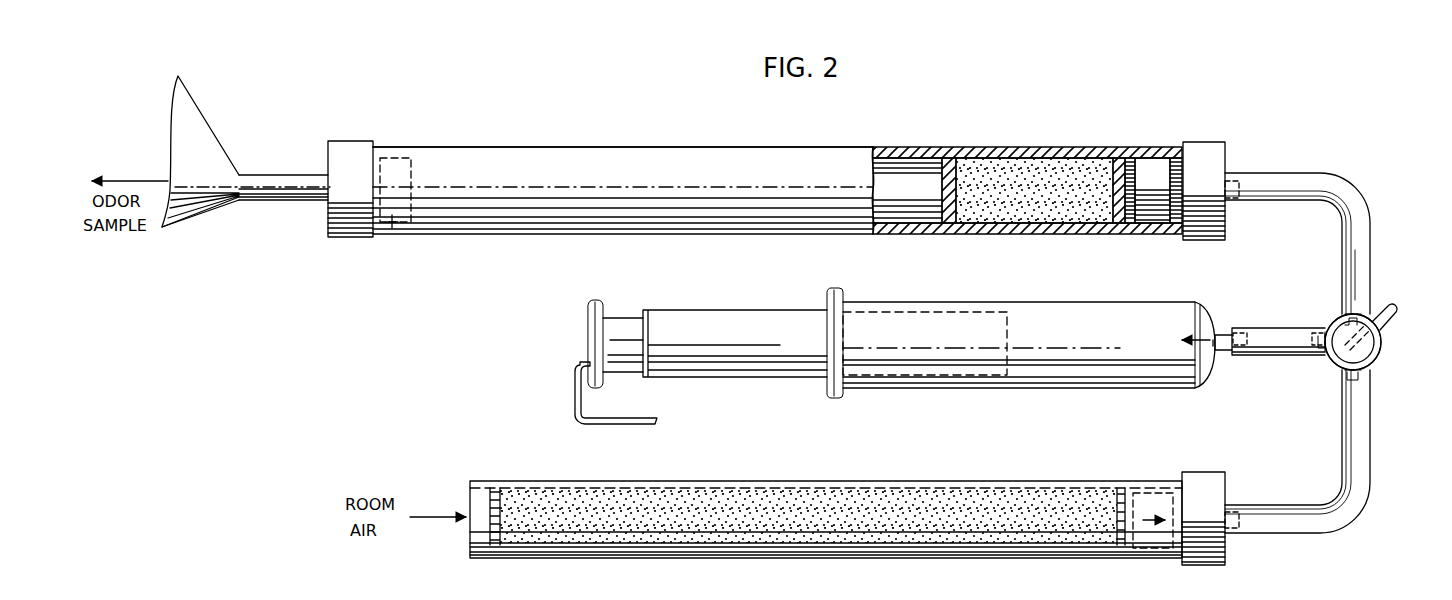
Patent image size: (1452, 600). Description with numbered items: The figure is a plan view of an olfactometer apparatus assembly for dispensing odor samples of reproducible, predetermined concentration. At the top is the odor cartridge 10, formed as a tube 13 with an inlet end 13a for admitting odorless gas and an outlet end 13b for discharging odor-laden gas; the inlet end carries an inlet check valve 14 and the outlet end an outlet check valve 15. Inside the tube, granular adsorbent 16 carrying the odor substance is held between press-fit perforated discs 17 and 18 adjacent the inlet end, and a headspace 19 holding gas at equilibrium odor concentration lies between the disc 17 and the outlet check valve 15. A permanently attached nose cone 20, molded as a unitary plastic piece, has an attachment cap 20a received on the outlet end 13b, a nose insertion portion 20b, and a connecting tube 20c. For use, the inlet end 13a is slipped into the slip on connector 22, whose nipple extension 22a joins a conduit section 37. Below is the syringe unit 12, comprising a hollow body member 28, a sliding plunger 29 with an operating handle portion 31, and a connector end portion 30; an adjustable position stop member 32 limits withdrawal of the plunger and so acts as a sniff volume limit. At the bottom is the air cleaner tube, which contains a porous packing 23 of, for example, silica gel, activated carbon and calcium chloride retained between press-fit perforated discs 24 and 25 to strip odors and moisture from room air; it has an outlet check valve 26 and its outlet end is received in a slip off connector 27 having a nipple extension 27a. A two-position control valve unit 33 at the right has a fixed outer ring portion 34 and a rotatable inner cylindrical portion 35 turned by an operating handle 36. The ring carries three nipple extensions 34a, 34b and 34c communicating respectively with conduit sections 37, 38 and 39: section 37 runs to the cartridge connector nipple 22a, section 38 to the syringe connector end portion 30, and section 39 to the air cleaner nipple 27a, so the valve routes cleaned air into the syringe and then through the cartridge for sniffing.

The odor cartridge 10 is at (840, 146).
The operating syringe 12 is at (1128, 387).
The tube 13 is at (803, 213).
The inlet end 13a is at (1178, 158).
The outlet end 13b is at (403, 147).
The inlet check valve 14 is at (1148, 165).
The outlet check valve 15 is at (390, 232).
The adsorbent 16 is at (1010, 168).
The perforated disc 17 is at (949, 158).
The perforated disc 18 is at (1120, 158).
The headspace 19 is at (918, 206).
The nose cone 20 is at (268, 175).
The attachment cap 20a is at (349, 141).
The nose insertion portion 20b is at (208, 124).
The tube 20c is at (268, 203).
The slip on connector 22 is at (1216, 163).
The nipple extension 22a is at (1233, 203).
The porous packing 23 is at (978, 545).
The perforated disc 24 is at (497, 488).
The perforated disc 25 is at (1125, 488).
The outlet check valve 26 is at (1162, 558).
The slip off connector 27 is at (1210, 473).
The nipple extension 27a is at (1240, 535).
The hollow body member 28 is at (1145, 313).
The sliding plunger 29 is at (755, 318).
The connector end portion 30 is at (1225, 334).
The operating handle portion 31 is at (620, 318).
The adjustable position stop member 32 is at (578, 404).
The two-position control valve unit 33 is at (1386, 342).
The fixed outer angular portion 34 is at (1378, 353).
The nipple extension 34a is at (1365, 290).
The nipple extension 34b is at (1325, 326).
The nipple extension 34c is at (1366, 398).
The rotatable inner cylindrical portion 35 is at (1338, 355).
The operating handle 36 is at (1388, 318).
The conduit section 37 is at (1340, 202).
The conduit section 38 is at (1258, 349).
The conduit section 39 is at (1362, 476).